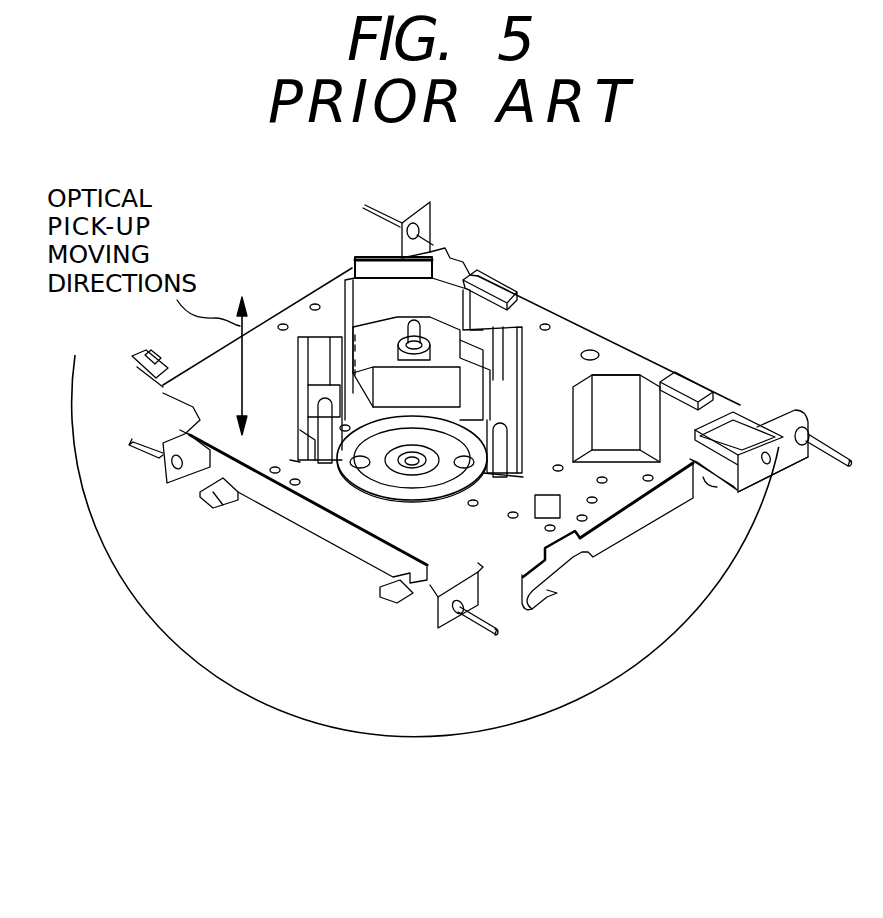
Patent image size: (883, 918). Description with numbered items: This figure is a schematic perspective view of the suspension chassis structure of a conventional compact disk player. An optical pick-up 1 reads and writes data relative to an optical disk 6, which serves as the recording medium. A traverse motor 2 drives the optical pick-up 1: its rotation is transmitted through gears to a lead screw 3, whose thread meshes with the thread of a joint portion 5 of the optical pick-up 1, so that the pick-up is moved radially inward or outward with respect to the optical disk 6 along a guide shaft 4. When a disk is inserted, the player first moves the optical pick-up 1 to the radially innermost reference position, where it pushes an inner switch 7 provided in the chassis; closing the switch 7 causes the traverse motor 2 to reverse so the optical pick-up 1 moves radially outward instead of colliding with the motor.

The optical pick-up 1 is at (387, 320).
The traverse motor 2 is at (648, 377).
The lead screw 3 is at (500, 460).
The guide shaft 4 is at (330, 347).
The joint portion 5 is at (512, 338).
The optical disk 6 is at (552, 720).
The inner switch 7 is at (297, 460).